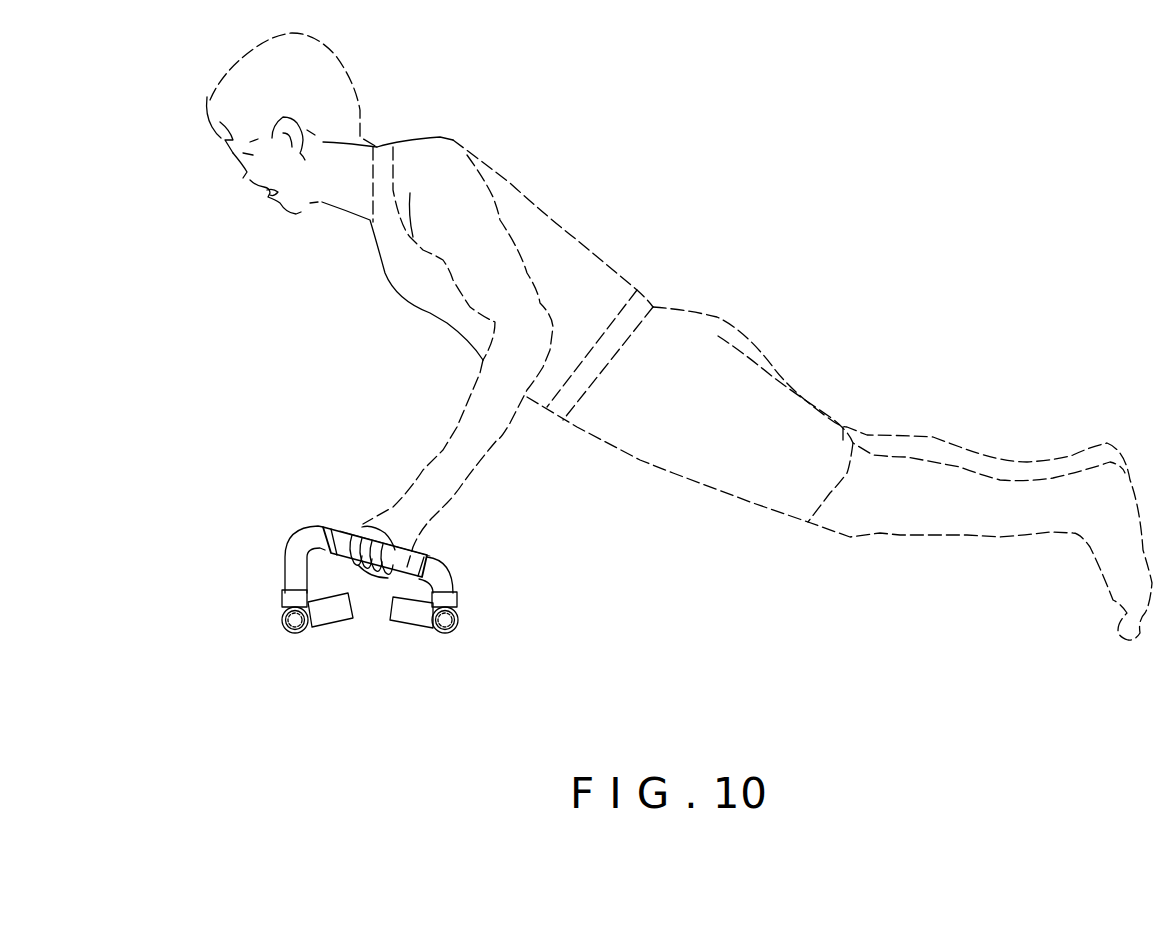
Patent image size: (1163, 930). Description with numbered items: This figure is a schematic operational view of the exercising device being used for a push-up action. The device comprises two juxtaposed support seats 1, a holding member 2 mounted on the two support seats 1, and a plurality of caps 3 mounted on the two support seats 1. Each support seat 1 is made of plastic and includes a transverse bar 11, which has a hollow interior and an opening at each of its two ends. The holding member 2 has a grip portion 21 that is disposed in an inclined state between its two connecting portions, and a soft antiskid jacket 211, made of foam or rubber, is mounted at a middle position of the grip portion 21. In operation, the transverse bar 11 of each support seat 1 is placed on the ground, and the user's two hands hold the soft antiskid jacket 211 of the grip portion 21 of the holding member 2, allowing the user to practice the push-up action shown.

The support seat 1 is at (281, 601).
The holding member 2 is at (281, 551).
The cap 3 is at (281, 620).
The transverse bar 11 is at (287, 634).
The grip portion 21 is at (349, 527).
The soft antiskid jacket 211 is at (293, 482).